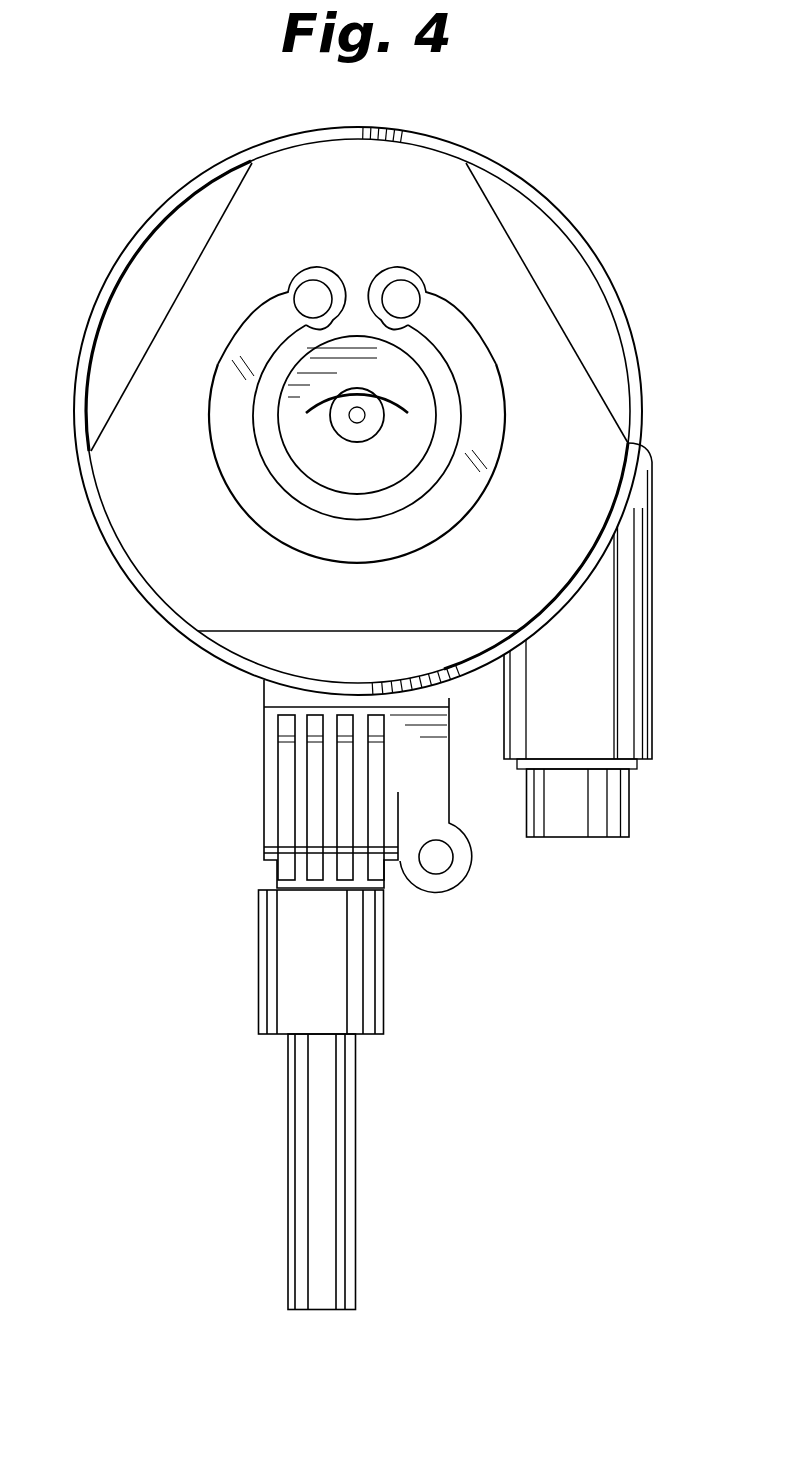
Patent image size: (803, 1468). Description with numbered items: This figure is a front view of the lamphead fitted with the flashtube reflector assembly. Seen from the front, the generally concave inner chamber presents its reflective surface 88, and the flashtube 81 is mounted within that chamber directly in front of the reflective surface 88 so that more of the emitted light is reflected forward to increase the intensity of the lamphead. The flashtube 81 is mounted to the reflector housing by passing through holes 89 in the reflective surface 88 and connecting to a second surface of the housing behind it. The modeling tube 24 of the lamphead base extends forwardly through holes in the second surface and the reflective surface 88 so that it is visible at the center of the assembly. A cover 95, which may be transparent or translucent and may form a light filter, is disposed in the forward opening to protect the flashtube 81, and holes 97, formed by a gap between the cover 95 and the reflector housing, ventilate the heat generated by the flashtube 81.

The modeling tube 24 is at (382, 413).
The flashtube 81 is at (460, 497).
The reflective surface 88 is at (268, 443).
The holes 89 is at (396, 268).
The cover 95 is at (487, 204).
The holes 97 is at (153, 270).